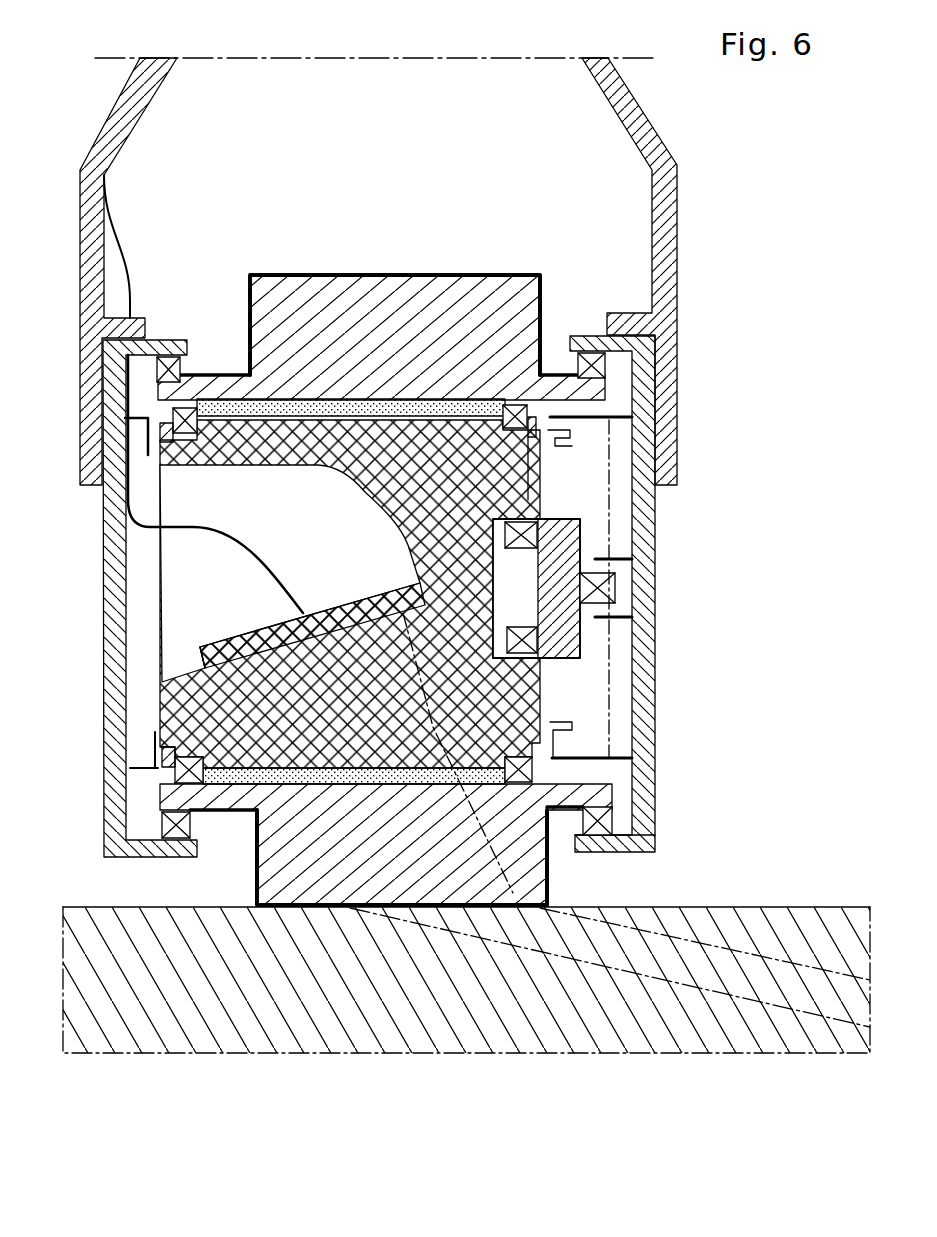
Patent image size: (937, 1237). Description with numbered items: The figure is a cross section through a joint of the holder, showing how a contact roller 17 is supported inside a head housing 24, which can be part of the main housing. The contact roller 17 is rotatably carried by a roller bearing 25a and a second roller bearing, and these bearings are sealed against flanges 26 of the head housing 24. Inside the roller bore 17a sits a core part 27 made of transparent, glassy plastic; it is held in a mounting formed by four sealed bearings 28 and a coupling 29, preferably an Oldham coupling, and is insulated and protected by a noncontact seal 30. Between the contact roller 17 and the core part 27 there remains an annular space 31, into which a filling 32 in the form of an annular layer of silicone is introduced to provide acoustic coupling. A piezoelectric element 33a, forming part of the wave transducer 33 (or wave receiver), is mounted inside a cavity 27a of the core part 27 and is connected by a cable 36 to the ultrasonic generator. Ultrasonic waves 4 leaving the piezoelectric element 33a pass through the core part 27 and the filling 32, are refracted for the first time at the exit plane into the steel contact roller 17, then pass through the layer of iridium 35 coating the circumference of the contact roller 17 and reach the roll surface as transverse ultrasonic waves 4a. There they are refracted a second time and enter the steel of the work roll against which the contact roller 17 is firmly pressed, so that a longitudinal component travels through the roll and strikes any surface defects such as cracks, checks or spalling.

The ultrasonic waves 4 is at (513, 907).
The transverse ultrasonic waves 4a is at (813, 968).
The contact roller 17 is at (455, 318).
The roller bore 17a is at (570, 410).
The head housing 24 is at (653, 148).
The roller bearing 25a is at (160, 372).
The flanges 26 is at (163, 345).
The core part 27 is at (515, 495).
The cavity 27a is at (207, 568).
The sealed bearings 28 is at (540, 753).
The coupling 29 is at (565, 543).
The noncontact seal 30 is at (607, 762).
The annular space 31 is at (233, 650).
The filling 32 is at (378, 785).
The wave transducer 33 is at (250, 626).
The piezoelectric element 33a is at (195, 645).
The layer of iridium 35 is at (453, 785).
The cable 36 is at (130, 297).